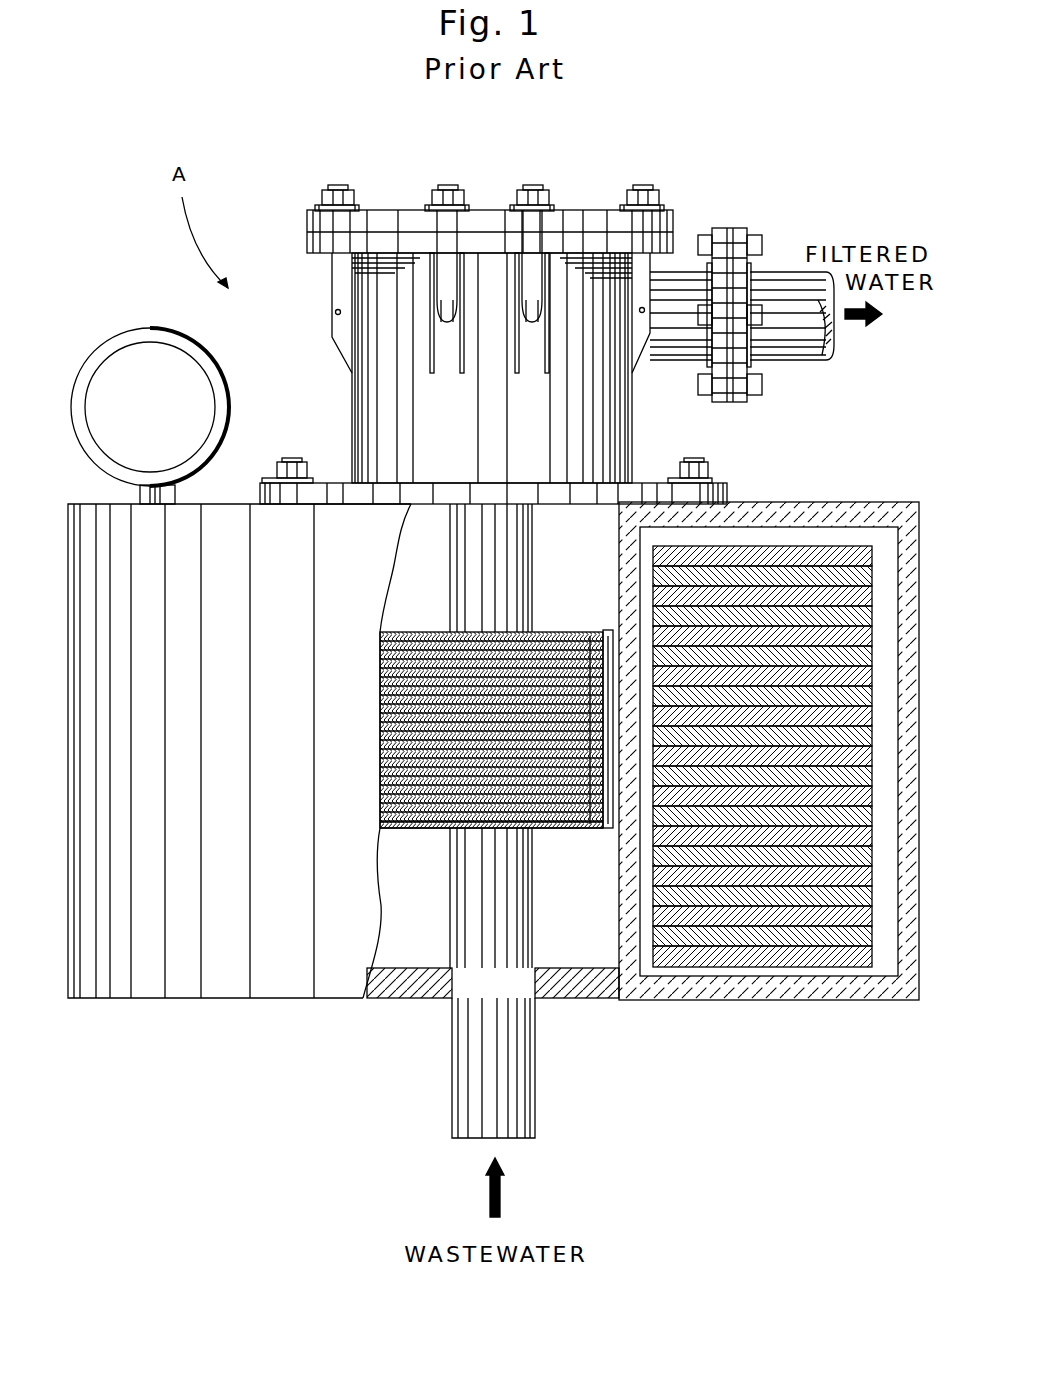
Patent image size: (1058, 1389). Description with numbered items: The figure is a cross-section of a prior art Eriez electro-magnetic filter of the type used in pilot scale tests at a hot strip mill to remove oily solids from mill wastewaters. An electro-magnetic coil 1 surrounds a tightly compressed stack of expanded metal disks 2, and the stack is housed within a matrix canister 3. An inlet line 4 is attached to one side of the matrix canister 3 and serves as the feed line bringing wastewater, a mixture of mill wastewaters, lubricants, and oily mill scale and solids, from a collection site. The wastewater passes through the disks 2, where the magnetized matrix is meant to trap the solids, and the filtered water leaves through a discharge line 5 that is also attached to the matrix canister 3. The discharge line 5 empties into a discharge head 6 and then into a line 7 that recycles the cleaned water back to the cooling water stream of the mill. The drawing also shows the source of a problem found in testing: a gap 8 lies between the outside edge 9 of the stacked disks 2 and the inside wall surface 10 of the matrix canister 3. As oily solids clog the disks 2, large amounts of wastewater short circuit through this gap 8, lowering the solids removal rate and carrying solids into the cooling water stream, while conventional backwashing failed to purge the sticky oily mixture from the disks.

The electro-magnetic coil 1 is at (825, 571).
The expanded metal disks 2 is at (403, 660).
The matrix canister 3 is at (395, 833).
The inlet line 4 is at (520, 1063).
The discharge line 5 is at (503, 570).
The discharge head 6 is at (607, 437).
The line 7 is at (682, 277).
The gap 8 is at (608, 823).
The outside edge 9 is at (590, 808).
The inside wall surface 10 is at (603, 657).